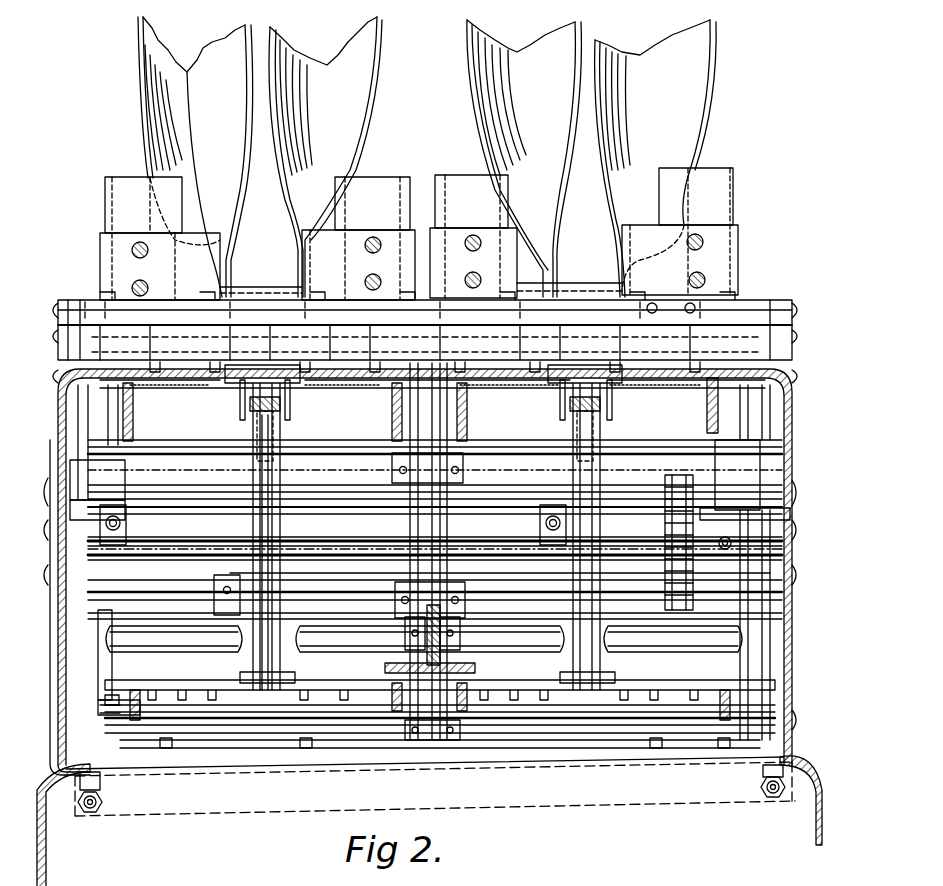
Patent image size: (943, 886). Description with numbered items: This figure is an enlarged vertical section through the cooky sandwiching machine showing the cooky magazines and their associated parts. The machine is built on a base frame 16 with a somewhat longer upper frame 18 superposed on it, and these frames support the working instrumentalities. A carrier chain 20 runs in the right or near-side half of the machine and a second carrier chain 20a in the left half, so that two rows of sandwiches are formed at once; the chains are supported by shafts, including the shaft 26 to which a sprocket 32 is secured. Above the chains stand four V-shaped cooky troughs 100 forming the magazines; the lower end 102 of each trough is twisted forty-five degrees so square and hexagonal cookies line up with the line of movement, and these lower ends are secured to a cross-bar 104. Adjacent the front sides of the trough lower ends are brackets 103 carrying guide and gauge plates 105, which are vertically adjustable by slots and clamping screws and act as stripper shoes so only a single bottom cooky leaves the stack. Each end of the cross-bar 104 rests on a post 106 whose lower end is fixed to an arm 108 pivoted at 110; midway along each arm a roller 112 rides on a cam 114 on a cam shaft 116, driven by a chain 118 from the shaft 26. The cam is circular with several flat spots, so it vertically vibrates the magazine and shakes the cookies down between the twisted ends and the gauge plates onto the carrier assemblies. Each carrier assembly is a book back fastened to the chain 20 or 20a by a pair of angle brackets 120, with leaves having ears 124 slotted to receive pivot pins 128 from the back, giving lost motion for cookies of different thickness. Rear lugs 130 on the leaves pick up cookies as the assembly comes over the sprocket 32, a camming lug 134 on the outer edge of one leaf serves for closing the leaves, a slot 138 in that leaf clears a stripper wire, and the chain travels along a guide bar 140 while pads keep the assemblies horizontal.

The base frame 16 is at (45, 850).
The upper frame 18 is at (62, 640).
The carrier chain 20 is at (282, 406).
The second carrier chain 20a is at (602, 407).
The shaft 26 is at (330, 538).
The sprocket 32 is at (212, 582).
The cooky trough 100 is at (290, 48).
The twisted lower end of trough 102 is at (225, 218).
The bracket 103 is at (315, 258).
The cross-bar 104 is at (255, 290).
The guide and gauge plate 105 is at (130, 180).
The post 106 is at (80, 362).
The arm 108 is at (70, 430).
The pivot 110 is at (60, 548).
The roller 112 is at (100, 478).
The cam 114 is at (115, 512).
The cam shaft 116 is at (348, 562).
The chain 118 is at (665, 578).
The angle bracket 120 is at (245, 392).
The ear 124 is at (300, 368).
The pivot pin 128 is at (232, 694).
The rear lug 130 is at (160, 350).
The camming lug 134 is at (120, 668).
The slot 138 is at (178, 390).
The guide bar 140 is at (280, 430).